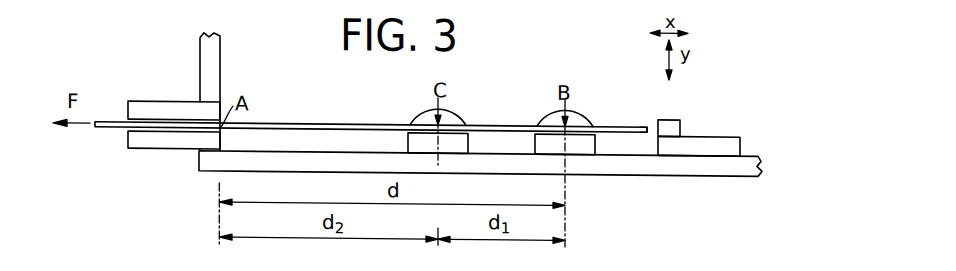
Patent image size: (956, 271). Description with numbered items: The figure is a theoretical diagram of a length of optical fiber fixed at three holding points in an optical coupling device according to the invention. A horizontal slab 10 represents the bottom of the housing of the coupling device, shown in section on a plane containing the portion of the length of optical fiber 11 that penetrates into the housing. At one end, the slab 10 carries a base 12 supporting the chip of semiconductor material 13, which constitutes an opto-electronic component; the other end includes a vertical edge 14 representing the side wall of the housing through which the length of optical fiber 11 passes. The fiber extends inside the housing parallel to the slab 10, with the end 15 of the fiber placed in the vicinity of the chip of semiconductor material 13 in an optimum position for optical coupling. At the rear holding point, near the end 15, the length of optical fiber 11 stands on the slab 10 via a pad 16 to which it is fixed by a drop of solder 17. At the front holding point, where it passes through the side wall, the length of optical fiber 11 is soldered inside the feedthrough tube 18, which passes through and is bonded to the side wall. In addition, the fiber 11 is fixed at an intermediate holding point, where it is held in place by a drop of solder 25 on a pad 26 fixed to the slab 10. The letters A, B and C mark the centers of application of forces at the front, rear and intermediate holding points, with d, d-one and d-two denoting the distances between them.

The slab 10 is at (632, 159).
The length of optical fiber 11 is at (315, 122).
The base 12 is at (710, 142).
The chip of semiconductor material 13 is at (673, 115).
The vertical edge 14 is at (208, 58).
The end of the fiber 15 is at (643, 123).
The pad 16 is at (578, 139).
The drop of solder 17 is at (553, 117).
The feedthrough tube 18 is at (157, 109).
The drop of solder 25 is at (427, 119).
The pad 26 is at (461, 141).